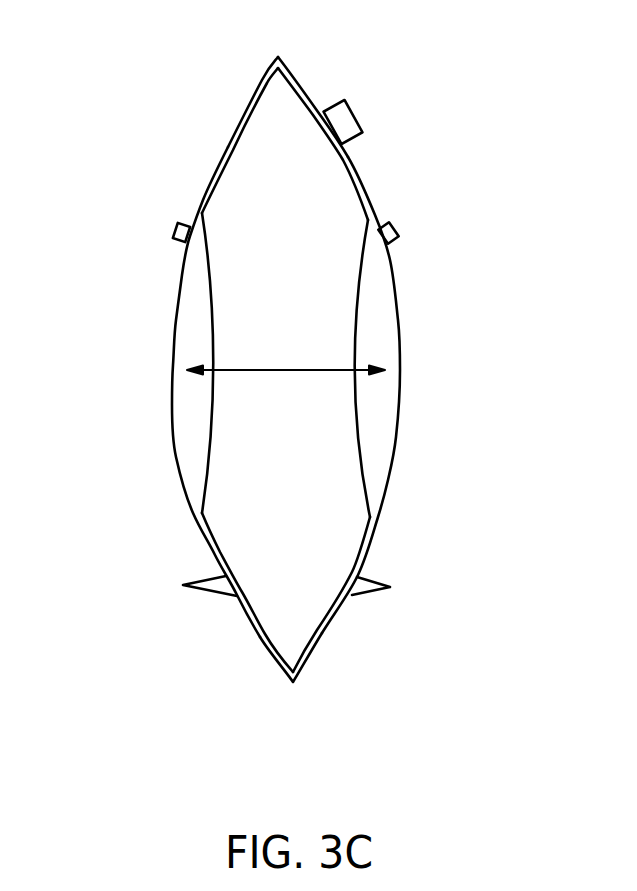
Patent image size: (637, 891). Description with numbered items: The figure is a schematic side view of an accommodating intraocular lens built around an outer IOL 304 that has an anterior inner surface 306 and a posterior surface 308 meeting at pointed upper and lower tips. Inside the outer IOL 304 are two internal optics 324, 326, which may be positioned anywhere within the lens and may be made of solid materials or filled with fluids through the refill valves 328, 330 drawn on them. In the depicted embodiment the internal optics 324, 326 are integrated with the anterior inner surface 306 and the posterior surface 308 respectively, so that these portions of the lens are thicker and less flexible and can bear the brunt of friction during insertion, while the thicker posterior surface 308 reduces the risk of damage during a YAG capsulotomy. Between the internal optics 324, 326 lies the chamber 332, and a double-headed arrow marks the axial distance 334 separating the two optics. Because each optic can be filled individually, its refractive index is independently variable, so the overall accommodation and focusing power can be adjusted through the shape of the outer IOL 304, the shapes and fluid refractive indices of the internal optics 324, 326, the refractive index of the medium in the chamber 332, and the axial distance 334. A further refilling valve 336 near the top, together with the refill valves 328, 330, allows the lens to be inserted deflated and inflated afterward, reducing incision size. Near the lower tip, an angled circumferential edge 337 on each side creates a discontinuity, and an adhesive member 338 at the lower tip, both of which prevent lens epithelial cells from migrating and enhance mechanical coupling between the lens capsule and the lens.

The outer IOL 304 is at (299, 78).
The anterior inner surface 306 is at (176, 456).
The posterior surface 308 is at (395, 437).
The internal optic 324 is at (393, 277).
The internal optic 326 is at (192, 302).
The refill valve 328 is at (398, 228).
The refill valve 330 is at (177, 226).
The chamber 332 is at (328, 513).
The axial distance 334 is at (292, 373).
The refilling valve 336 is at (360, 117).
The angled circumferential edge 337 is at (210, 593).
The adhesive member 338 is at (317, 648).